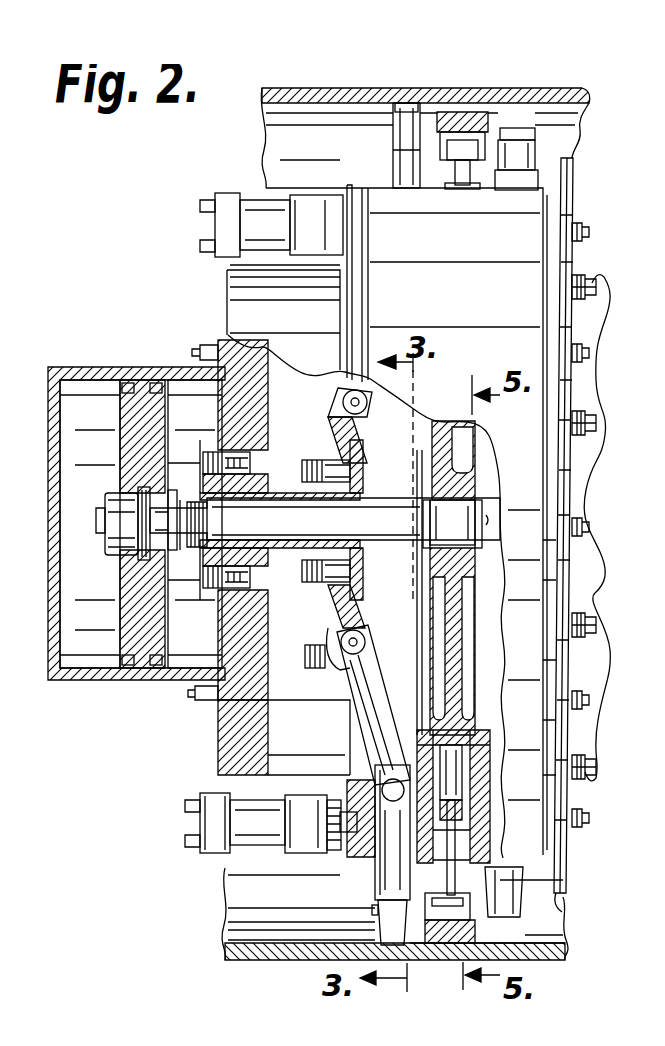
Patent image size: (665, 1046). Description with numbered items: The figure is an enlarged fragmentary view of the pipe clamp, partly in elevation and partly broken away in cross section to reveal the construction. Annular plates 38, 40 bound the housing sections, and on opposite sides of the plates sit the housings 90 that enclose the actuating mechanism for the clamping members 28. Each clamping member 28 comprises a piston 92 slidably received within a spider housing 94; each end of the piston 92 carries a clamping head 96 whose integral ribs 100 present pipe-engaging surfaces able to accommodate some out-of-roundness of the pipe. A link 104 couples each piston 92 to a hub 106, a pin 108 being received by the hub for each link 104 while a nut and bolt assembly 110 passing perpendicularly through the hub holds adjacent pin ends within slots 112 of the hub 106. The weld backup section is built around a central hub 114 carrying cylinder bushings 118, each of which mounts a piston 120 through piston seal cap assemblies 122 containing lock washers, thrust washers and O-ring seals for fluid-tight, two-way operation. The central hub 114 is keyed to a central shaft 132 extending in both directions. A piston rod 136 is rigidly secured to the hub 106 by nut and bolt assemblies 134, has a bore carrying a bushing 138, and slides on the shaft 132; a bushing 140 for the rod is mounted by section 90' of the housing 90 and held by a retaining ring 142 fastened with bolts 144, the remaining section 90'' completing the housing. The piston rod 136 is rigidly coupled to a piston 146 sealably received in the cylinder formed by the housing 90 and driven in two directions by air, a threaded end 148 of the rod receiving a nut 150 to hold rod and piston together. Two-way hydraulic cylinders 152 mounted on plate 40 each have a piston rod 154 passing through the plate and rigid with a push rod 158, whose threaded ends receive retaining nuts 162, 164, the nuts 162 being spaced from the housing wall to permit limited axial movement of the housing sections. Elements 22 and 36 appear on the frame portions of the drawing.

The frame 22 is at (352, 88).
The clamping member 28 is at (372, 912).
The mounting member 36 is at (476, 102).
The annular plate 38 is at (570, 198).
The annular plate 40 is at (348, 185).
The housing 90 is at (211, 598).
The housing section 90' is at (288, 520).
The housing section 90'' is at (392, 523).
The piston 92 is at (393, 172).
The spider housing 94 is at (416, 700).
The clamping head 96 is at (395, 130).
The integral rib 100 is at (400, 103).
The link 104 is at (340, 392).
The hub 106 is at (330, 425).
The pin 108 is at (367, 405).
The nut and bolt assembly 110 is at (305, 655).
The slot 112 is at (345, 670).
The central hub 114 is at (460, 650).
The cylinder bushing 118 is at (462, 750).
The piston 120 is at (458, 805).
The piston seal cap assembly 122 is at (465, 780).
The central shaft 132 is at (402, 512).
The nut and bolt assembly 134 is at (360, 472).
The piston rod 136 is at (294, 500).
The bushing 138 is at (296, 548).
The bushing 140 is at (250, 586).
The retaining ring 142 is at (205, 458).
The bolt 144 is at (250, 458).
The piston 146 is at (125, 408).
The threaded end 148 is at (106, 540).
The nut 150 is at (140, 488).
The hydraulic cylinder 152 is at (262, 196).
The piston rod 154 is at (330, 818).
The push rod 158 is at (335, 850).
The retaining nut 162 is at (596, 290).
The retaining nut 164 is at (590, 236).